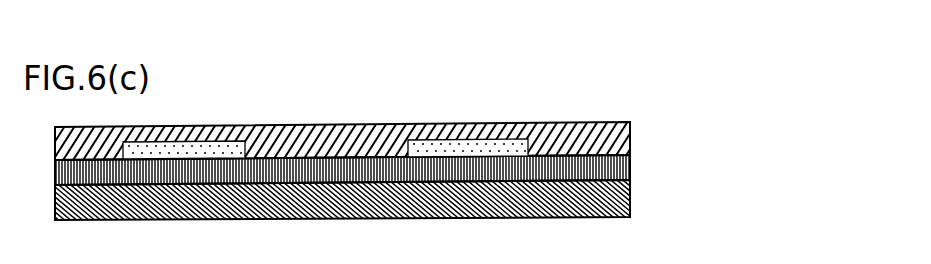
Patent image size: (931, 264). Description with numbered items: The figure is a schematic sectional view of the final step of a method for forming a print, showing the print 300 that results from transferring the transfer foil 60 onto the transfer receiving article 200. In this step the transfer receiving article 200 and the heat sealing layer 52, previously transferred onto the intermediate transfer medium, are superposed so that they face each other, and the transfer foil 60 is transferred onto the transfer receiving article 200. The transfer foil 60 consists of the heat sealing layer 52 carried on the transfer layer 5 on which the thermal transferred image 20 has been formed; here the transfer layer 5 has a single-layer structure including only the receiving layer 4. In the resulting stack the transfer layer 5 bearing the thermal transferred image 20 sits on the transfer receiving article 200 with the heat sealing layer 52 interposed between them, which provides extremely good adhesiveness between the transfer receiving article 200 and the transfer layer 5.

The thermal transferred image 20 is at (447, 143).
The print 300 is at (426, 123).
The transfer layer 5 is at (382, 141).
The receiving layer 4 is at (598, 130).
The heat sealing layer 52 is at (595, 168).
The transfer foil 60 is at (426, 150).
The transfer receiving article 200 is at (575, 208).